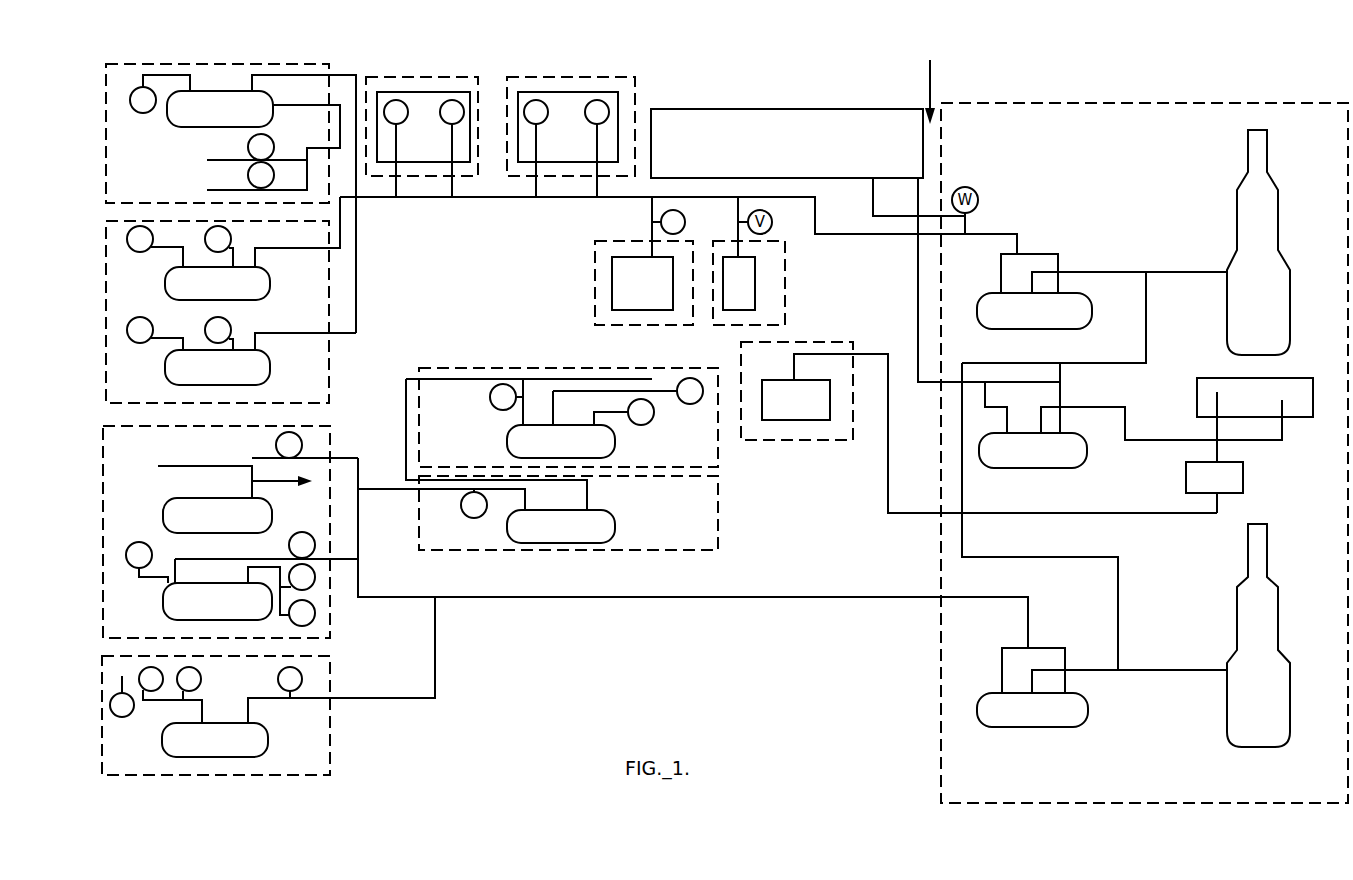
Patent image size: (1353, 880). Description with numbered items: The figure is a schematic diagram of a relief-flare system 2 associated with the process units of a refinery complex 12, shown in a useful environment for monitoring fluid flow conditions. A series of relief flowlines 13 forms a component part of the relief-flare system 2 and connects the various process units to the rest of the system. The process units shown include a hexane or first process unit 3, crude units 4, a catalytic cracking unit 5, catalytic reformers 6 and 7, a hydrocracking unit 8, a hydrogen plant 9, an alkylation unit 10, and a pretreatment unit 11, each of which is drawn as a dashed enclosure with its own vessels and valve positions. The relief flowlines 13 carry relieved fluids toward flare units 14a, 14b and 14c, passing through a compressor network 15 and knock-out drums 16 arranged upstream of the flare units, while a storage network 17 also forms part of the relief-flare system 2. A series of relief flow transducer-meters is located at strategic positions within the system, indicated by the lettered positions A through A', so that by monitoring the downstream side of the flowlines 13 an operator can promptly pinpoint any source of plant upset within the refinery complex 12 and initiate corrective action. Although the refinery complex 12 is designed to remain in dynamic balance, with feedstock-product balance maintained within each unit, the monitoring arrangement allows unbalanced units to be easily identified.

The relief-flare system 2 is at (938, 91).
The process unit 3 is at (240, 190).
The crude unit 4 is at (243, 300).
The catalytic cracking unit 5 is at (235, 537).
The catalytic reformer 6 is at (331, 757).
The catalytic reformer 7 is at (636, 92).
The hydrocracking unit 8 is at (455, 77).
The hydrogen plant 9 is at (595, 296).
The alkylation unit 10 is at (718, 447).
The pretreatment unit 11 is at (718, 532).
The refinery complex 12 is at (615, 650).
The relief flowlines 13 is at (396, 178).
The flare unit 14a is at (1229, 202).
The flare unit 14b is at (1227, 728).
The flare unit 14c is at (1272, 477).
The compressor network 15 is at (830, 109).
The knock-out drums 16 is at (1088, 318).
The storage network 17 is at (853, 442).